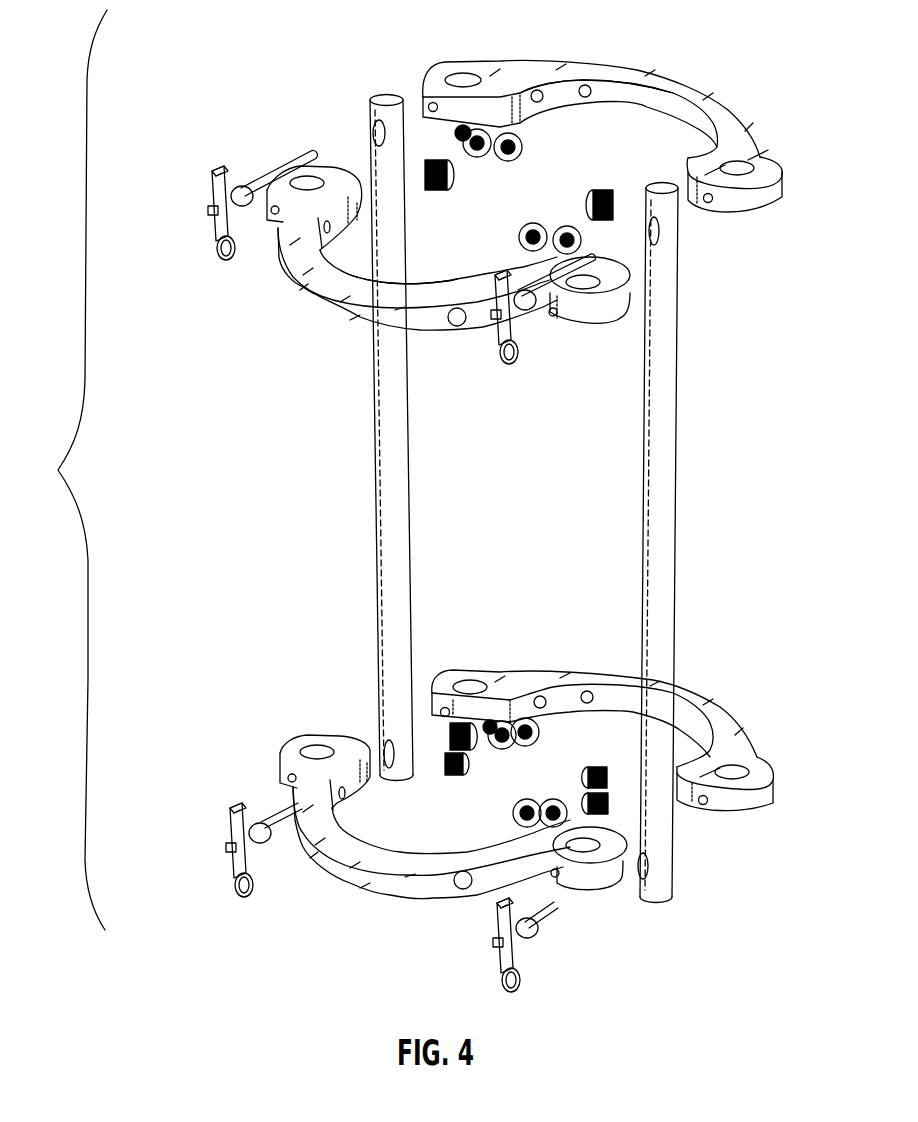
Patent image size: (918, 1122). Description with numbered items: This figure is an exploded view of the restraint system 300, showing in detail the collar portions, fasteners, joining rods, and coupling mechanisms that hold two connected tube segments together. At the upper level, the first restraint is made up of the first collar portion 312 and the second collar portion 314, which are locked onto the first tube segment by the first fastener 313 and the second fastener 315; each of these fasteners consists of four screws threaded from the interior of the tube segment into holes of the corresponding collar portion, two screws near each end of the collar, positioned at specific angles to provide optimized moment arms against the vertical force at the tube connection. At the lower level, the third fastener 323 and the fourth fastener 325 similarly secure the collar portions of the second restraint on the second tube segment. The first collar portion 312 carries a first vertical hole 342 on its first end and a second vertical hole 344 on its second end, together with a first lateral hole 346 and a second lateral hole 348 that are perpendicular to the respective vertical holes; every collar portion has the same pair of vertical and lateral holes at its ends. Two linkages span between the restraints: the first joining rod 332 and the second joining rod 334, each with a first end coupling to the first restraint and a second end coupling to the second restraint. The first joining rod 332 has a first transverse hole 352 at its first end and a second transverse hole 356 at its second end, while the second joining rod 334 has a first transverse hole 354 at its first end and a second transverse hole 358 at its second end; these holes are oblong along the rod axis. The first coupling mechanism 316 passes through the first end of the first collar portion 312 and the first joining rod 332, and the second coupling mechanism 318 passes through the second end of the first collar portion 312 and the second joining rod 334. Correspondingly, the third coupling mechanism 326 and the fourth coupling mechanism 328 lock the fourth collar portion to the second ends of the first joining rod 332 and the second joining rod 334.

The restraint system 300 is at (61, 470).
The first collar portion 312 is at (563, 148).
The first fastener 313 is at (630, 187).
The second collar portion 314 is at (330, 303).
The second fastener 315 is at (407, 180).
The first coupling mechanism 316 is at (520, 367).
The second coupling mechanism 318 is at (215, 256).
The third fastener 323 is at (620, 777).
The fourth fastener 325 is at (420, 753).
The third coupling mechanism 326 is at (493, 973).
The fourth coupling mechanism 328 is at (230, 890).
The first joining rod 332 is at (664, 463).
The second joining rod 334 is at (397, 528).
The first vertical hole 342 is at (748, 163).
The second vertical hole 344 is at (470, 73).
The first lateral hole 346 is at (708, 203).
The second lateral hole 348 is at (431, 104).
The first transverse hole 352 is at (657, 234).
The first transverse hole 354 is at (376, 128).
The second transverse hole 356 is at (637, 883).
The second transverse hole 358 is at (384, 746).